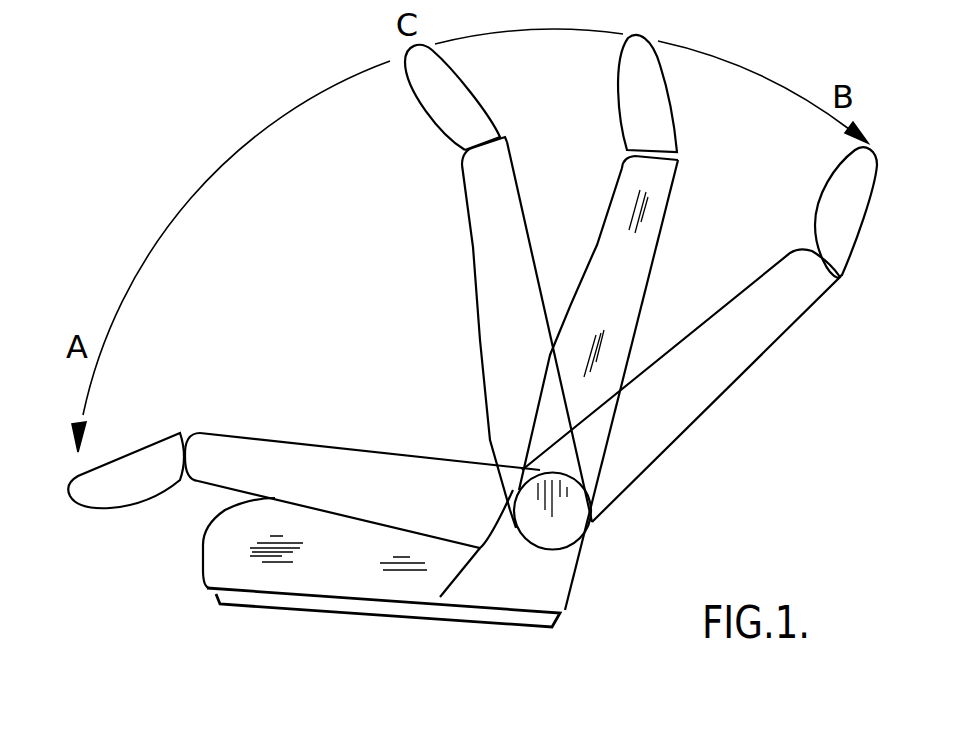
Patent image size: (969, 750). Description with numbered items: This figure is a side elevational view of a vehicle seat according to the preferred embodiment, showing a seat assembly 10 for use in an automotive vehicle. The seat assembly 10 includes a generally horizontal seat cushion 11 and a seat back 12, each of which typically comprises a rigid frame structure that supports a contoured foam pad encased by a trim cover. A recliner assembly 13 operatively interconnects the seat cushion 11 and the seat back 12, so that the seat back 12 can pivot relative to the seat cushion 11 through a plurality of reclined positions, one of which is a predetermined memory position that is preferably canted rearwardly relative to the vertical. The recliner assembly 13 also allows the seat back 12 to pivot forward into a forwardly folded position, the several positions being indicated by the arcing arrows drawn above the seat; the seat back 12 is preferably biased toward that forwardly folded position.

The seat assembly 10 is at (472, 386).
The seat cushion 11 is at (323, 578).
The seat back 12 is at (607, 277).
The recliner assembly 13 is at (573, 505).